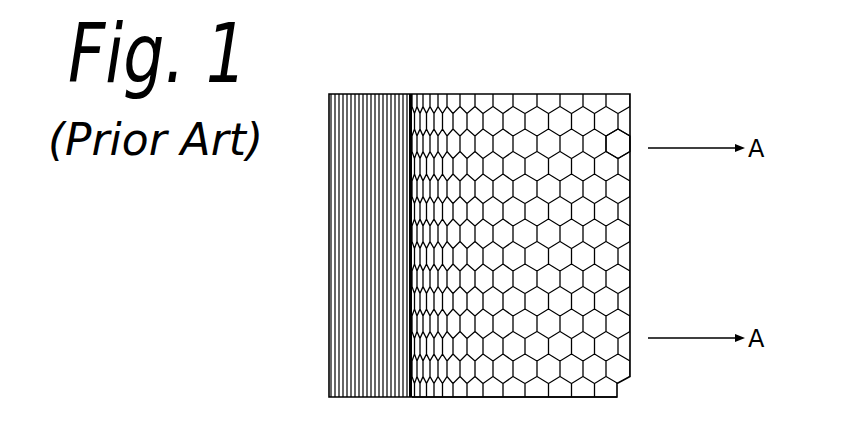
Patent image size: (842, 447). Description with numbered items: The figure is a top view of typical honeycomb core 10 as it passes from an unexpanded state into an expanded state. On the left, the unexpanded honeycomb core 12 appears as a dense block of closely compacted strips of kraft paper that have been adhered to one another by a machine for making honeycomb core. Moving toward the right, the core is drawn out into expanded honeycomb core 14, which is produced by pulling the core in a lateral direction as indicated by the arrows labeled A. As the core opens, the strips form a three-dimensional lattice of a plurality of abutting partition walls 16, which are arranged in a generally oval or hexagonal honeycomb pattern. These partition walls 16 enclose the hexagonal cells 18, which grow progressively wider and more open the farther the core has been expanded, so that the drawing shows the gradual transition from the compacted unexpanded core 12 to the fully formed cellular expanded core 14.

The honeycomb core 10 is at (410, 63).
The unexpanded honeycomb core 12 is at (326, 233).
The expanded honeycomb core 14 is at (605, 406).
The partition walls 16 is at (545, 95).
The hexagonal cells 18 is at (618, 145).